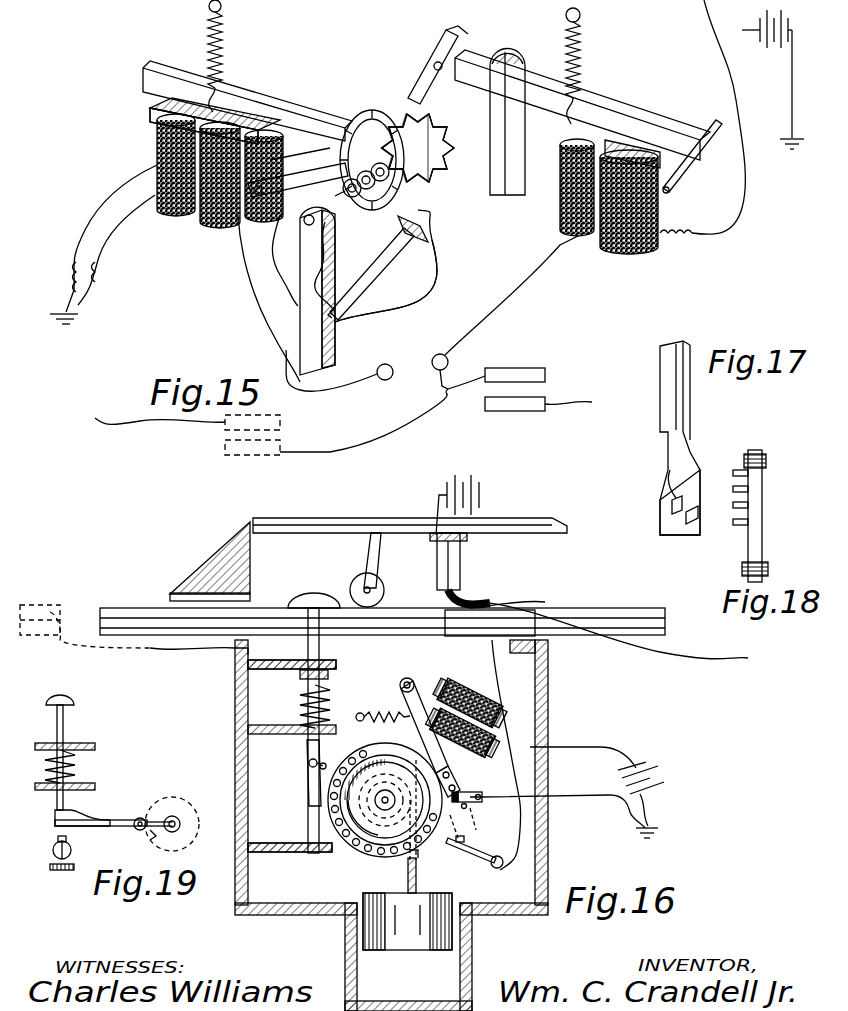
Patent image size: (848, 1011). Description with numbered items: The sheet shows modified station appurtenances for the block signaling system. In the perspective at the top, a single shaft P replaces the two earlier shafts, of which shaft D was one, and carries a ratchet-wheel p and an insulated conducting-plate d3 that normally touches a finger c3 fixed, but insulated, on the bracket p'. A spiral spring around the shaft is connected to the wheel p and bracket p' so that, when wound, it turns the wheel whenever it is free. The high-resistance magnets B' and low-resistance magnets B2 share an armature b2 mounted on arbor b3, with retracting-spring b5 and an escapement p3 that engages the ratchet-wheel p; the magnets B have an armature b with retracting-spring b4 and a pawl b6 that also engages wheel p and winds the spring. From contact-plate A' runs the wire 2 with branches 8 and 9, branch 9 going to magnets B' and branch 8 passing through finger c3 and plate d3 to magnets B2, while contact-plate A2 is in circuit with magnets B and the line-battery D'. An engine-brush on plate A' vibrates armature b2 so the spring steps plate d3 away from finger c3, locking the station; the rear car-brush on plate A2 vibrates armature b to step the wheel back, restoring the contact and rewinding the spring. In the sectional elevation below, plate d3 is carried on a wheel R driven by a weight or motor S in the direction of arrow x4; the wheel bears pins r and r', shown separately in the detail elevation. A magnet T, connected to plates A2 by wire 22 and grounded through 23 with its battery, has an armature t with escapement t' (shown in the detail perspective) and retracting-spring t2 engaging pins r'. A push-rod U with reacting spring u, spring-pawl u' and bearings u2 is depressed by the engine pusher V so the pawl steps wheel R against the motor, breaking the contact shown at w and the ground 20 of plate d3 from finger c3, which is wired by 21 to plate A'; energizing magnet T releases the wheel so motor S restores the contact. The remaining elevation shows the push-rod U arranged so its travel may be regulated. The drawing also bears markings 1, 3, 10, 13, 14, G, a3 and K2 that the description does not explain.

In FIG. 15, the armature b is at (582, 105).
In FIG. 15, the armature b2 is at (252, 112).
In FIG. 15, the arbor b3 is at (300, 154).
In FIG. 15, the retracting-spring b4 is at (587, 66).
In FIG. 15, the retracting-spring b5 is at (228, 56).
In FIG. 15, the pawl b6 is at (437, 65).
In FIG. 15, the magnets B is at (609, 207).
In FIG. 15, the high-resistance magnets B' is at (220, 179).
In FIG. 15, the low-resistance magnets B2 is at (285, 150).
In FIG. 15, the insulated conducting-plate d3 is at (298, 180).
In FIG. 15, the ratchet-wheel p is at (421, 148).
In FIG. 15, the shaft P is at (427, 146).
In FIG. 15, the escapement p3 is at (372, 112).
In FIG. 15, the bracket p' is at (332, 291).
In FIG. 15, the finger c3 is at (386, 268).
In FIG. 16, the finger c3 is at (475, 849).
In FIG. 15, the wire 1 is at (438, 348).
In FIG. 15, the wire 2 is at (265, 393).
In FIG. 15, the wire 3 is at (722, 117).
In FIG. 15, the branch 8 is at (349, 266).
In FIG. 15, the branch 9 is at (264, 298).
In FIG. 15, the wire 10 is at (116, 250).
In FIG. 15, the frame side 13 is at (386, 281).
In FIG. 15, the wire 14 is at (111, 238).
In FIG. 15, the ground G is at (427, 226).
In FIG. 16, the ground G is at (652, 832).
In FIG. 15, the shaft D is at (791, 69).
In FIG. 15, the contact-plate A' is at (392, 384).
In FIG. 16, the contact-plate A' is at (490, 623).
In FIG. 15, the contact-plate A2 is at (366, 433).
In FIG. 16, the contact-plate A2 is at (548, 582).
In FIG. 17, the armature t is at (670, 438).
In FIG. 16, the armature t is at (430, 728).
In FIG. 17, the escapement t' is at (680, 512).
In FIG. 16, the retracting-spring t2 is at (383, 703).
In FIG. 18, the pins r is at (739, 507).
In FIG. 16, the pins r is at (384, 803).
In FIG. 16, the pins r' is at (421, 810).
In FIG. 18, the wheel R is at (763, 516).
In FIG. 16, the wheel R is at (385, 797).
In FIG. 16, the weight or motor S is at (407, 904).
In FIG. 16, the push-rod U is at (324, 723).
In FIG. 19, the push-rod U is at (68, 752).
In FIG. 16, the reacting spring u is at (322, 705).
In FIG. 16, the bearings u2 is at (292, 756).
In FIG. 19, the bearings u2 is at (79, 763).
In FIG. 16, the spring-pawl u' is at (302, 773).
In FIG. 19, the spring-pawl u' is at (117, 824).
In FIG. 16, the magnet T is at (466, 717).
In FIG. 16, the contact a3 is at (470, 792).
In FIG. 16, the contact position w is at (480, 824).
In FIG. 16, the arrow x4 is at (453, 873).
In FIG. 16, the pusher or bar V is at (357, 570).
In FIG. 16, the battery K2 is at (477, 505).
In FIG. 16, the ground 20 is at (559, 811).
In FIG. 16, the wire 21 is at (511, 755).
In FIG. 16, the wire 22 is at (453, 651).
In FIG. 16, the ground 23 is at (583, 749).
In FIG. 16, the line-battery D' is at (646, 777).